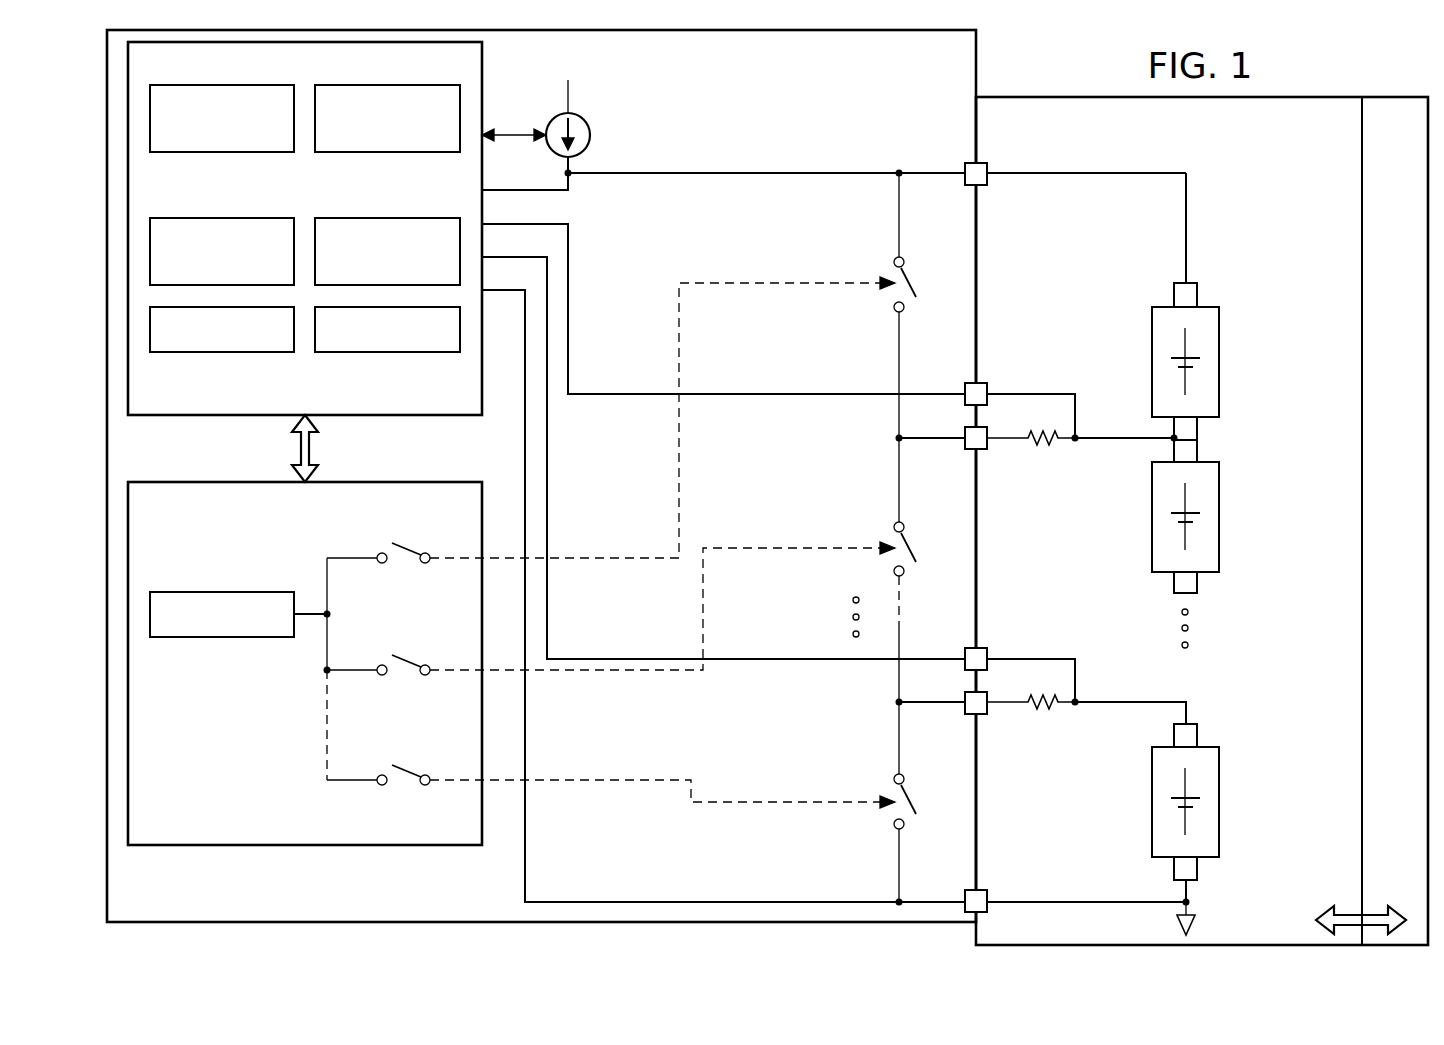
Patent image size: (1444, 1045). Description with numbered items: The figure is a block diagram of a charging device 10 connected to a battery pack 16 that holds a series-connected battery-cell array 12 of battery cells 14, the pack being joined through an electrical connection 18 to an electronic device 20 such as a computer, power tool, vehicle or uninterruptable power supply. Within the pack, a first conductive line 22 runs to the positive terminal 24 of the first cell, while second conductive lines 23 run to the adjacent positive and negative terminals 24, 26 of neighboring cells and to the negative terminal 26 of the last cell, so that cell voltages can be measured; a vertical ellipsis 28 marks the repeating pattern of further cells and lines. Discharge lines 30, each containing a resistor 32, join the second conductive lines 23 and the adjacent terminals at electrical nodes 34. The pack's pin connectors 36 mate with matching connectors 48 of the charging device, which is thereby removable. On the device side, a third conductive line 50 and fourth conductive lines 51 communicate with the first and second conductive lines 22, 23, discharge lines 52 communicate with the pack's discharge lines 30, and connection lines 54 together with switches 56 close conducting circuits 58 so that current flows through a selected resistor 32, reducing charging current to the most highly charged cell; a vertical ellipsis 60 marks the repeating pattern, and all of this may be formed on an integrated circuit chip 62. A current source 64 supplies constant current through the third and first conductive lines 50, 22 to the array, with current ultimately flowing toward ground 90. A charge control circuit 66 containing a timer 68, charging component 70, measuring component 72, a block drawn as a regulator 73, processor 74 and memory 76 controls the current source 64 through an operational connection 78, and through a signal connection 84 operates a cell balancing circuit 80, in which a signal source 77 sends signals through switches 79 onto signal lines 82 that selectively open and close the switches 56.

The charging device 10 is at (985, 66).
The battery-cell array 12 is at (1252, 248).
The battery cells 14 is at (1220, 365).
The battery pack 16 is at (1308, 90).
The electrical connection 18 is at (1322, 914).
The electronic device 20 is at (1396, 95).
The first conductive line 22 is at (1185, 232).
The second conductive lines 23 is at (1030, 393).
The positive terminal 24 is at (1200, 296).
The negative terminal 26 is at (1200, 428).
The vertical ellipsis 28 is at (1192, 628).
The discharge lines 30 is at (1105, 441).
The resistor 32 is at (1045, 450).
The electrical nodes 34 is at (1078, 435).
The electrical connectors 36 is at (983, 163).
The connectors 48 is at (968, 163).
The third conductive line 50 is at (723, 172).
The fourth conductive lines 51 is at (625, 393).
The discharge lines 52 is at (932, 439).
The connection lines 54 is at (898, 355).
The switches 56 is at (906, 280).
The conducting circuit 58 is at (898, 215).
The vertical ellipsis 60 is at (851, 618).
The integrated circuit chip 62 is at (323, 900).
The current source 64 is at (584, 119).
The charge control circuit 66 is at (494, 68).
The timer 68 is at (212, 153).
The charging component 70 is at (377, 153).
The measuring component 72 is at (232, 217).
The regulator 73 is at (397, 217).
The processor 74 is at (220, 353).
The memory 76 is at (387, 353).
The signal source 77 is at (220, 638).
The operational connection 78 is at (516, 131).
The switches 79 is at (408, 547).
The cell balancing circuit 80 is at (268, 855).
The signal lines 82 is at (790, 283).
The signal connection 84 is at (299, 450).
The ground 90 is at (1192, 912).